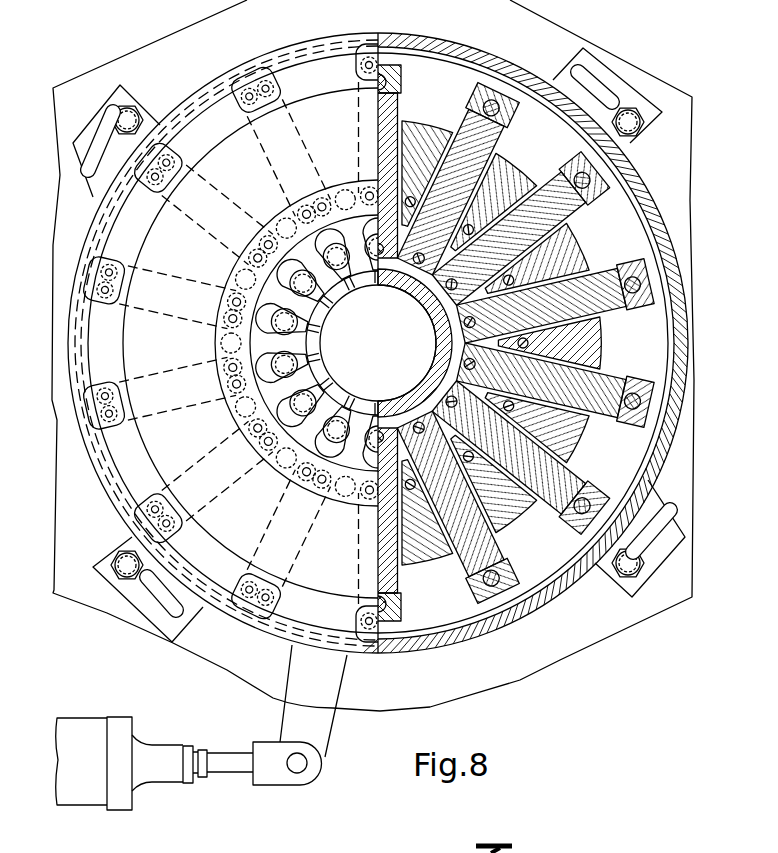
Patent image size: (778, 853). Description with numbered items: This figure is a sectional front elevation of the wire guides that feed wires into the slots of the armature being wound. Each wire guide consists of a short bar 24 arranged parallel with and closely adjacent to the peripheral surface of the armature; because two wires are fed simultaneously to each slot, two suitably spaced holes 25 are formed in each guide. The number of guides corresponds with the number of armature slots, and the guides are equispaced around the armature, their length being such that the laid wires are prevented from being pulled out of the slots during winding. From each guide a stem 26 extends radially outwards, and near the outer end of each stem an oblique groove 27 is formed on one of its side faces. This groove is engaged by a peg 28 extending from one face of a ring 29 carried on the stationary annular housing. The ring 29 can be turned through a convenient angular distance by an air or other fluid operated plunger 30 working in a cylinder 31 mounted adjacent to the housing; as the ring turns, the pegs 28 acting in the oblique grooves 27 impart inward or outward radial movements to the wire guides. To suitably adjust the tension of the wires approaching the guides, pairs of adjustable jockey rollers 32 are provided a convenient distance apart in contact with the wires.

The short bar 24 is at (407, 285).
The holes 25 is at (319, 331).
The stem 26 is at (393, 113).
The oblique groove 27 is at (400, 89).
The peg 28 is at (398, 76).
The ring 29 is at (455, 72).
The plunger 30 is at (230, 760).
The cylinder 31 is at (77, 723).
The adjustable jockey rollers 32 is at (268, 98).